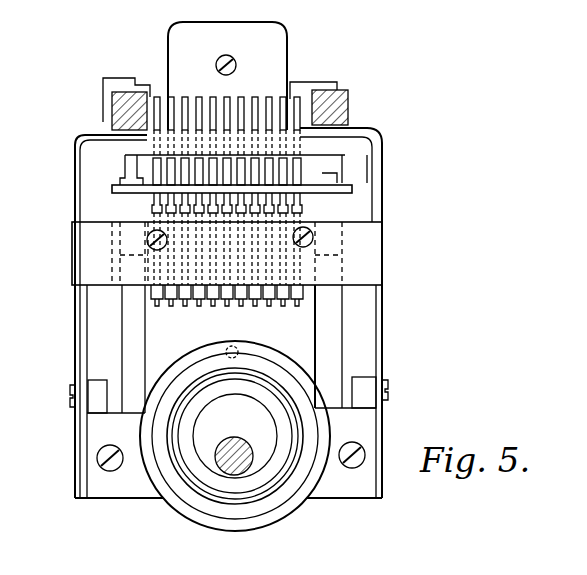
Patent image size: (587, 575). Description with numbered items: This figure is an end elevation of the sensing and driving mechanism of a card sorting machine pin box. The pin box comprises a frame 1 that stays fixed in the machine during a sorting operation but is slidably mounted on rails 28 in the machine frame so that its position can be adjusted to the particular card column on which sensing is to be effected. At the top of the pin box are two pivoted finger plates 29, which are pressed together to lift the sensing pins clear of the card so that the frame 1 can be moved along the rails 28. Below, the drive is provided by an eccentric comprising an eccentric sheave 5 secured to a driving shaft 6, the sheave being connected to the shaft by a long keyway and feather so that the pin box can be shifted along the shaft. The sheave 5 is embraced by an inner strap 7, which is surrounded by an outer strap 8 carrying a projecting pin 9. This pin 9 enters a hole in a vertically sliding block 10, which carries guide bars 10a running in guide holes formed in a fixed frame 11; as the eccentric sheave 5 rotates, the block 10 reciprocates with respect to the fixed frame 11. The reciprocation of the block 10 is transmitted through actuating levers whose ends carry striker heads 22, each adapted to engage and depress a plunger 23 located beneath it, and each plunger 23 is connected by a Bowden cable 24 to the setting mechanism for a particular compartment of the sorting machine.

The frame 1 is at (150, 86).
The eccentric sheave 5 is at (252, 410).
The driving shaft 6 is at (242, 470).
The inner strap 7 is at (178, 435).
The outer strap 8 is at (187, 370).
The projecting pin 9 is at (225, 350).
The vertically sliding block 10 is at (300, 341).
The guide bars 10a is at (127, 308).
The fixed frame 11 is at (136, 488).
The striker heads 22 is at (298, 112).
The plunger 23 is at (300, 174).
The Bowden cable 24 is at (305, 305).
The rails 28 is at (113, 106).
The finger plates 29 is at (224, 29).